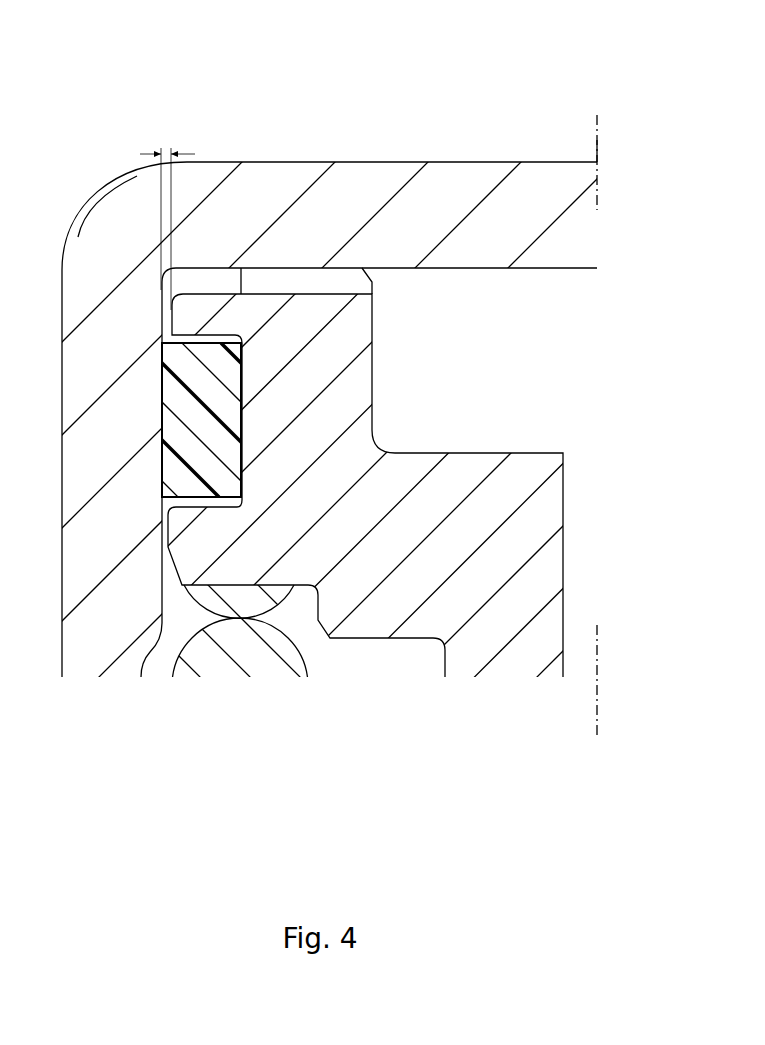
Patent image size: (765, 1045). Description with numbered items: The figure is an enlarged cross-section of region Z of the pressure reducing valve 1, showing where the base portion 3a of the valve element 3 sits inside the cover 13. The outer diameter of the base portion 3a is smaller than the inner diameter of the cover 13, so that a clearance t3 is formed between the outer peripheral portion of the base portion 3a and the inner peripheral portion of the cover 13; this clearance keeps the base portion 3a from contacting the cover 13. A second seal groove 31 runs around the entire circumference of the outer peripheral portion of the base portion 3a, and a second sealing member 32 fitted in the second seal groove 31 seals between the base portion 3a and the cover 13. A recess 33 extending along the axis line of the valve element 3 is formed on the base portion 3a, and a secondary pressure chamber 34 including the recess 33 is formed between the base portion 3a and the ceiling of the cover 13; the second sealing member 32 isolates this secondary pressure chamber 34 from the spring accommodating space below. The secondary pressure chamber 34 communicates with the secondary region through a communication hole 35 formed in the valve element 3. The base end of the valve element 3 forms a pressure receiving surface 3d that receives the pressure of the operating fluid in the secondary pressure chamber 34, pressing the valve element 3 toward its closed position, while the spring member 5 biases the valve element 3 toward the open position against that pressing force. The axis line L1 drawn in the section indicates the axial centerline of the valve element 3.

The pressure reducing valve 1 is at (122, 116).
The valve element 3 is at (382, 453).
The base portion 3a is at (178, 330).
The pressure receiving surface 3d is at (310, 280).
The spring member 5 is at (222, 672).
The cover 13 is at (90, 380).
The second seal groove 31 is at (165, 492).
The second sealing member 32 is at (199, 420).
The recess 33 is at (593, 388).
The secondary pressure chamber 34 is at (547, 388).
The communication hole 35 is at (600, 540).
The clearance t3 is at (180, 152).
The center line L1 is at (600, 140).